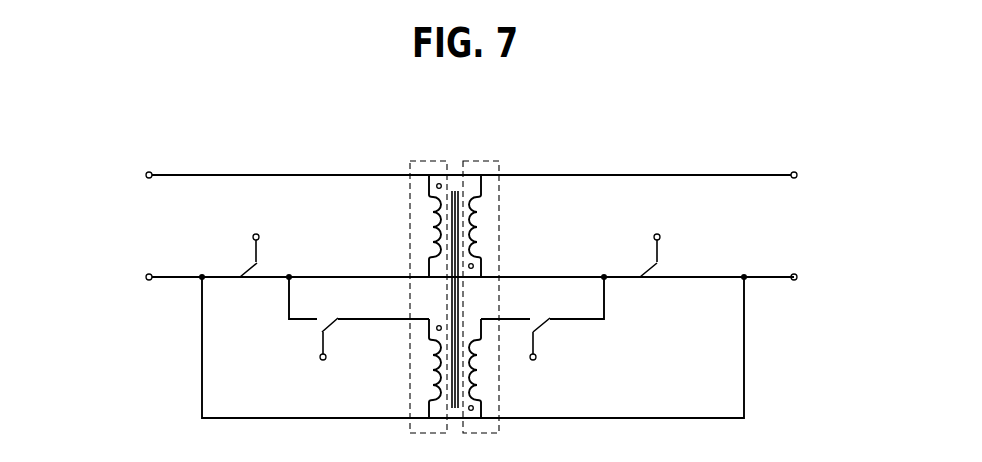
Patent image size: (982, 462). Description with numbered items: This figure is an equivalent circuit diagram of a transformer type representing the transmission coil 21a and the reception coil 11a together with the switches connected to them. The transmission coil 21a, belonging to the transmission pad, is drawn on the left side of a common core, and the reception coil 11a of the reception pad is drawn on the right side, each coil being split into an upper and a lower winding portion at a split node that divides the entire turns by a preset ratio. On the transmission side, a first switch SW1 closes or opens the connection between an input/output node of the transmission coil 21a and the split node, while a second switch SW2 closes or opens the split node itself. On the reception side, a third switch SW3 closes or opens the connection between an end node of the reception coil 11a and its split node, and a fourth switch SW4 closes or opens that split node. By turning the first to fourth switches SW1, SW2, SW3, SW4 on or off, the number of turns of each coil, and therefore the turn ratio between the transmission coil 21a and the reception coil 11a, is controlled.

The transmission coil 21a is at (430, 159).
The reception coil 11a is at (480, 159).
The first switch SW1 is at (242, 255).
The second switch SW2 is at (337, 339).
The third switch SW3 is at (670, 250).
The fourth switch SW4 is at (567, 339).